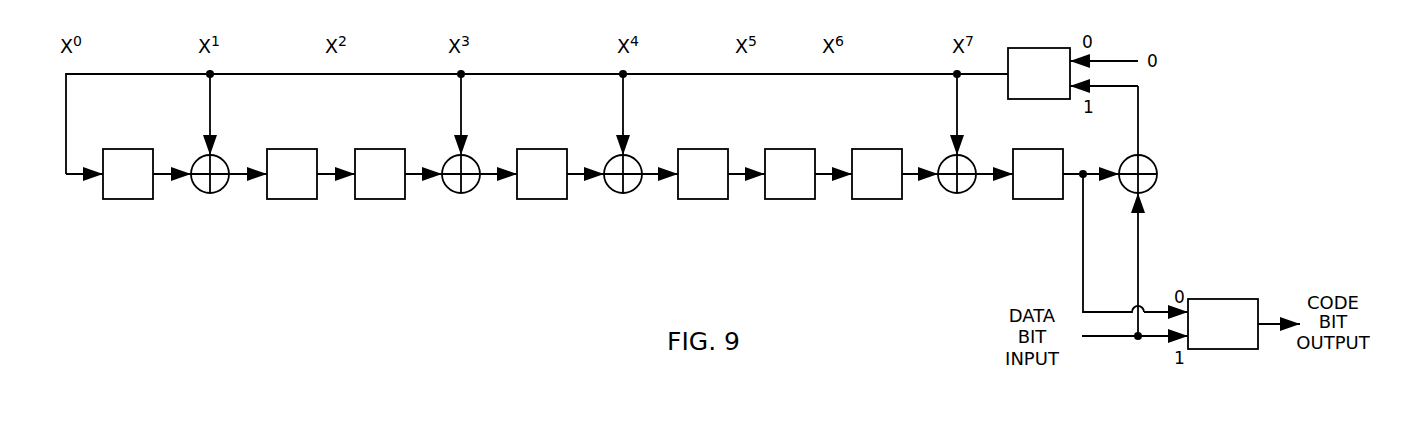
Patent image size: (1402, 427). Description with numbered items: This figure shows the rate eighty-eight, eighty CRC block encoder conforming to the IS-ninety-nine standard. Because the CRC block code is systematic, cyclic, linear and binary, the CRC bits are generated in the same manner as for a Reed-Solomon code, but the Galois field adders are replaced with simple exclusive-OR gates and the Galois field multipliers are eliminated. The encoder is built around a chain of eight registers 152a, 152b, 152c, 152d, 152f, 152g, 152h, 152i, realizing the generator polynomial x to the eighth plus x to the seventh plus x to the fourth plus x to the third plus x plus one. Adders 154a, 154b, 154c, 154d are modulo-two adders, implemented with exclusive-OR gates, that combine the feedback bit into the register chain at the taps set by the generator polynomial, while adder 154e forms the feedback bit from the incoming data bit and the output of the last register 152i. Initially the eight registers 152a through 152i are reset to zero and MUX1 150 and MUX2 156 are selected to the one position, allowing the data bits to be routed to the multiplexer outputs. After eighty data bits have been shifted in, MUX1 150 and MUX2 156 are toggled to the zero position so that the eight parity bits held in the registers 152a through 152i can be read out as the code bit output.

The MUX1 150 is at (1040, 48).
The register 152a is at (128, 200).
The register 152b is at (292, 200).
The register 152c is at (380, 200).
The register 152d is at (542, 200).
The register 152f is at (703, 200).
The register 152g is at (790, 200).
The register 152h is at (877, 200).
The register 152i is at (1038, 200).
The adder 154a is at (213, 194).
The adder 154b is at (464, 194).
The adder 154c is at (626, 194).
The adder 154d is at (960, 194).
The adder 154e is at (1157, 178).
The MUX2 156 is at (1227, 299).